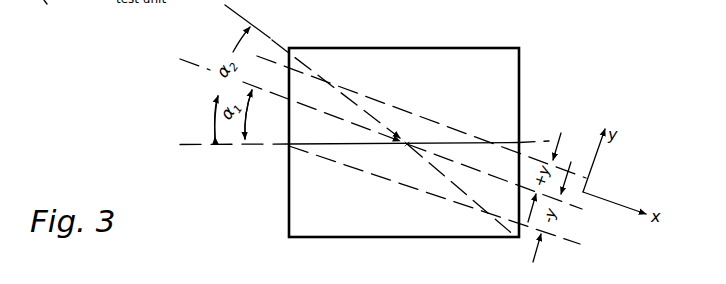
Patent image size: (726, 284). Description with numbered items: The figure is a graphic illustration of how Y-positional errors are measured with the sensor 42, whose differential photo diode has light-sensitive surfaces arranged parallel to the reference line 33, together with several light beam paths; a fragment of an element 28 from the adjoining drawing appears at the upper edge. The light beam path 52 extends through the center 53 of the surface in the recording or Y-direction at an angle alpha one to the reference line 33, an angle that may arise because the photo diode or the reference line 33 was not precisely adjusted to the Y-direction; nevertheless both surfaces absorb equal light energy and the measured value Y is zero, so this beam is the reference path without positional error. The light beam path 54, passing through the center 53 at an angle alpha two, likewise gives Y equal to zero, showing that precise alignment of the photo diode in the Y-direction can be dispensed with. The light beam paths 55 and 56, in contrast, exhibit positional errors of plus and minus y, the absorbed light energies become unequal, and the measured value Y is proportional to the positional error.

The light source / emitter (clipped from previous figure) 28 is at (29, 5).
The reference line 33 is at (191, 147).
The sensor 42 is at (420, 63).
The light beam path 52 is at (179, 59).
The center of the surface 53 is at (407, 147).
The light beam path 54 is at (241, 11).
The light beam path 55 is at (433, 118).
The light beam path 56 is at (347, 165).